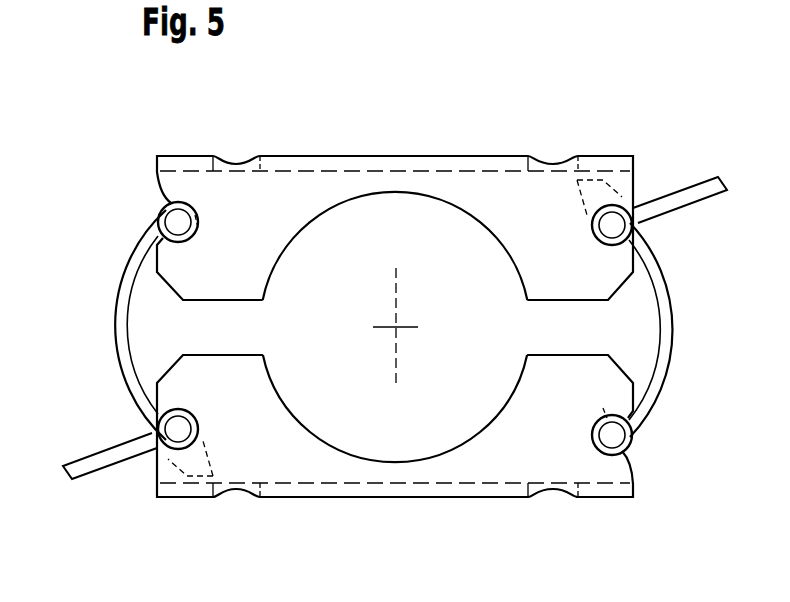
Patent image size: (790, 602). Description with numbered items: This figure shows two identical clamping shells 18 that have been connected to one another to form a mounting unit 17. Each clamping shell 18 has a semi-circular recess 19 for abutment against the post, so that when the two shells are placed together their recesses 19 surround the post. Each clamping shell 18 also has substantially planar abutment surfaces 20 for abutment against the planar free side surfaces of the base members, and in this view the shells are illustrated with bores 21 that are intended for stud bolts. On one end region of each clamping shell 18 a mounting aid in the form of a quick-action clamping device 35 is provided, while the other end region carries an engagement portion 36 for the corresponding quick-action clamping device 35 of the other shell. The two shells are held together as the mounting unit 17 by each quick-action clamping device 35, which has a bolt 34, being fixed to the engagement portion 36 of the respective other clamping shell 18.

The mounting unit 17 is at (399, 329).
The clamping shell 18 is at (475, 178).
The semi-circular recess 19 is at (396, 194).
The planar abutment surface 20 is at (377, 155).
The bore 21 is at (240, 161).
The bolt 34 is at (176, 220).
The quick-action clamping device 35 is at (118, 318).
The engagement portion 36 is at (190, 234).